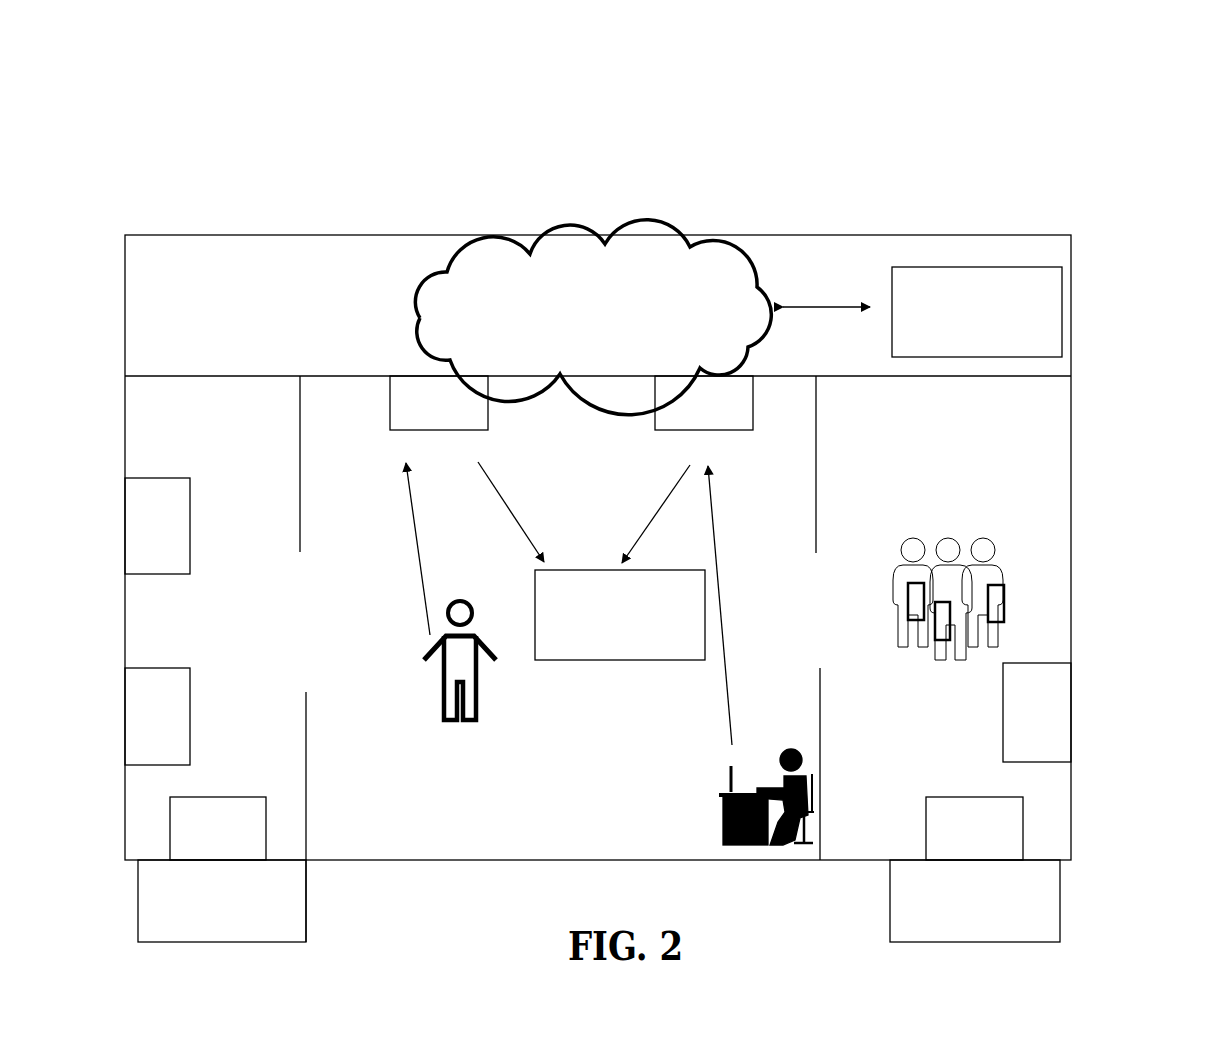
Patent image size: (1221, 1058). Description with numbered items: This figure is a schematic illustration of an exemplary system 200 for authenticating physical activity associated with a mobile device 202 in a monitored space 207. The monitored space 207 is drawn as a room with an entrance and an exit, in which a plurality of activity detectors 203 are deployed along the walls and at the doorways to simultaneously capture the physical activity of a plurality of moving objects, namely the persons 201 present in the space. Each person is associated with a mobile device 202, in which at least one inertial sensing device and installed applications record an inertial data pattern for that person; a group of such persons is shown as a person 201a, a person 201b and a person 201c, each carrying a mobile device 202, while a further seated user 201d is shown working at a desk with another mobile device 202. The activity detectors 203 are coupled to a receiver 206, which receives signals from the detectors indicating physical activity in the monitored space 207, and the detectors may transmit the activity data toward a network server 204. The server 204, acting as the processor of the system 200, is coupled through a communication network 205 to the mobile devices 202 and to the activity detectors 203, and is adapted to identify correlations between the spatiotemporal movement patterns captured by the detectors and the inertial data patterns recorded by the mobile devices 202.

The system 200 is at (1144, 93).
The persons 201 is at (452, 594).
The person 201a is at (908, 529).
The person 201b is at (945, 531).
The person 201c is at (989, 532).
The user at desk 201d is at (780, 745).
The mobile device 202 is at (724, 785).
The activity detector 203 is at (598, 618).
The network server 204 is at (977, 312).
The network 205 is at (612, 364).
The receiver 206 is at (591, 561).
The monitored space 207 is at (1075, 446).